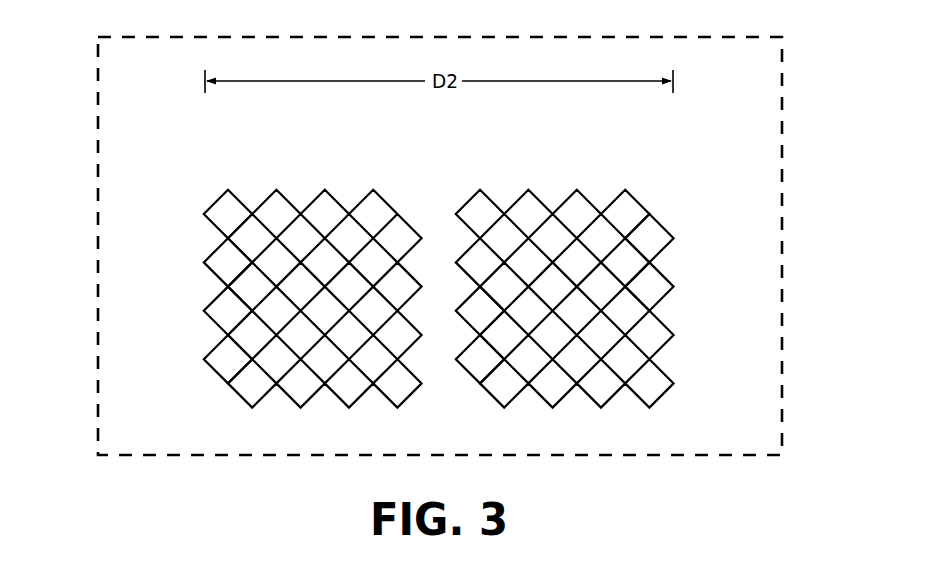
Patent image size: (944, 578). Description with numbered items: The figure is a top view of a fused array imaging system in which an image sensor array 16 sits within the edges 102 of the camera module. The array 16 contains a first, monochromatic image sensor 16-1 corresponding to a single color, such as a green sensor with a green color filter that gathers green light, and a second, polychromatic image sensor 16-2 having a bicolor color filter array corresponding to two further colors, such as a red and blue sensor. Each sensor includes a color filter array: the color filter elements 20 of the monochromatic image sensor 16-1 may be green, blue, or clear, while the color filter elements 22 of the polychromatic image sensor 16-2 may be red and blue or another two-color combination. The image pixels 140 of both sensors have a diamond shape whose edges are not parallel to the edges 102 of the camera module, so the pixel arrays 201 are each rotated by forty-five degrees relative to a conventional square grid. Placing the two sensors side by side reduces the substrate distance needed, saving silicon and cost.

The edges of the camera module 102 is at (306, 36).
The image sensor array 16 is at (232, 130).
The monochromatic image sensor 16-1 is at (312, 399).
The polychromatic image sensor 16-2 is at (563, 399).
The pixel array 201 is at (409, 205).
The color filter elements 20 is at (222, 260).
The color filter elements 22 is at (654, 283).
The image pixels 140 is at (210, 322).